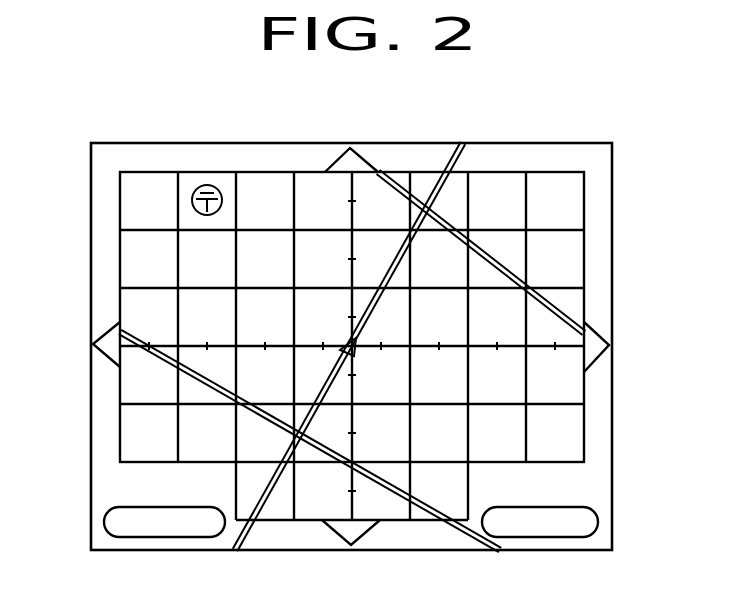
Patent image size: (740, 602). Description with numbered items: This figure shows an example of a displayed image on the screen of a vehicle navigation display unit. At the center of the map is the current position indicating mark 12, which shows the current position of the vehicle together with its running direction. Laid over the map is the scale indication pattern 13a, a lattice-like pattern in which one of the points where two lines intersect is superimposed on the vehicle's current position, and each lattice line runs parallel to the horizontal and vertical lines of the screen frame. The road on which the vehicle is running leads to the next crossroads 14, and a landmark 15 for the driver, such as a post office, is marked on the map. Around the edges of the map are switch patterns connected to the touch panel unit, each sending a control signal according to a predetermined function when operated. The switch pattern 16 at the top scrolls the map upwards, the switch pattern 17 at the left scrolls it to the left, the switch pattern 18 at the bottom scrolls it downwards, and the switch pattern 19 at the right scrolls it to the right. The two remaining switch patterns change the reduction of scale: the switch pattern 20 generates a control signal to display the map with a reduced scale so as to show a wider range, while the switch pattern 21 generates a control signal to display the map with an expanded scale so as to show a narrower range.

The current position indicating mark 12 is at (355, 352).
The scale indication pattern 13a is at (545, 173).
The next crossroads 14 is at (433, 208).
The landmark 15 is at (207, 185).
The switch pattern 16 is at (358, 160).
The switch pattern 17 is at (112, 360).
The switch pattern 18 is at (363, 527).
The switch pattern 19 is at (602, 343).
The switch pattern 20 is at (170, 537).
The switch pattern 21 is at (568, 537).